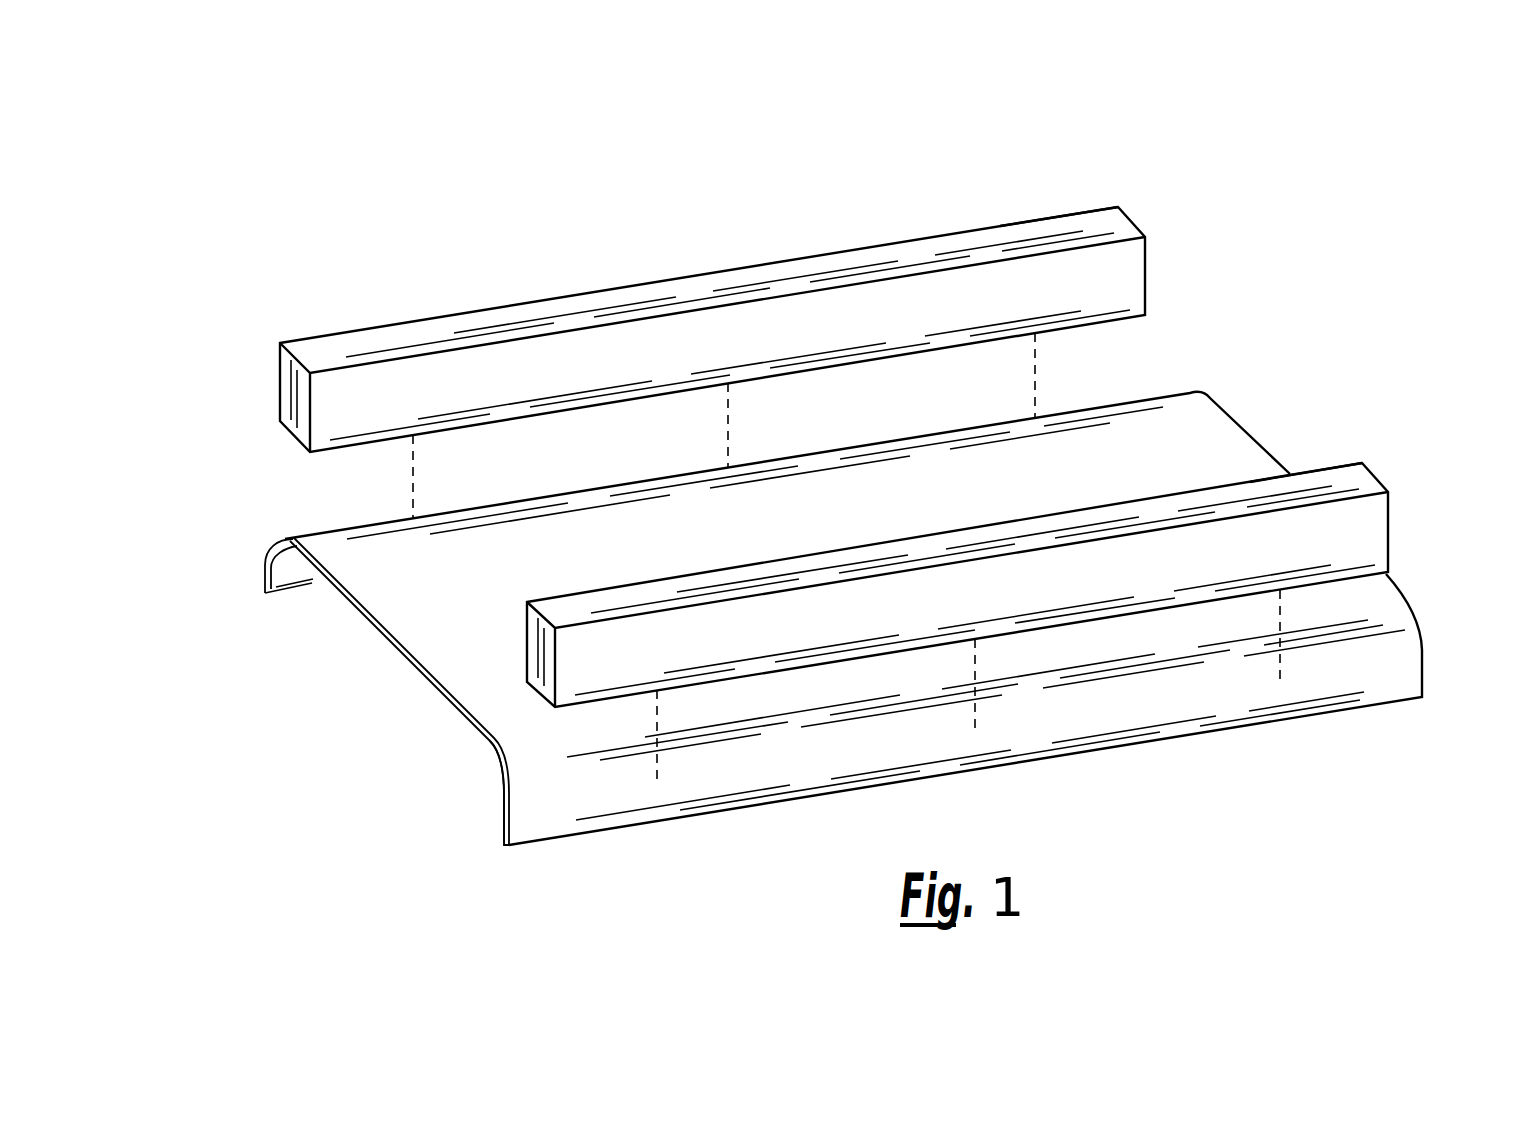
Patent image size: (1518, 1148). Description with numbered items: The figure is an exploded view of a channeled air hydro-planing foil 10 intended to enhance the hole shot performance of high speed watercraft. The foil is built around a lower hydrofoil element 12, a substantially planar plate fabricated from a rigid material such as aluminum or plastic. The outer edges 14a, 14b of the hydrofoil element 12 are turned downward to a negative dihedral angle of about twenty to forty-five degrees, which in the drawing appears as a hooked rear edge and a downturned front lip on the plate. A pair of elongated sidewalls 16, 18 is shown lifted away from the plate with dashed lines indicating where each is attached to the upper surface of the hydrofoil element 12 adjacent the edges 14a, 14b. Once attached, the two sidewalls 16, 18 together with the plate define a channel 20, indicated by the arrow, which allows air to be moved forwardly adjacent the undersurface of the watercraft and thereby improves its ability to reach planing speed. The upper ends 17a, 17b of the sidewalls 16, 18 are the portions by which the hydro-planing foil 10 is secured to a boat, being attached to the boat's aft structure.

The channeled air hydro-planing foil 10 is at (490, 226).
The lower hydrofoil element 12 is at (958, 504).
The outer edge 14a is at (261, 592).
The outer edge 14b is at (508, 848).
The sidewall 16 is at (650, 364).
The upper end 17a is at (1085, 210).
The upper end 17b is at (1330, 465).
The sidewall 18 is at (894, 621).
The channel 20 is at (1268, 399).